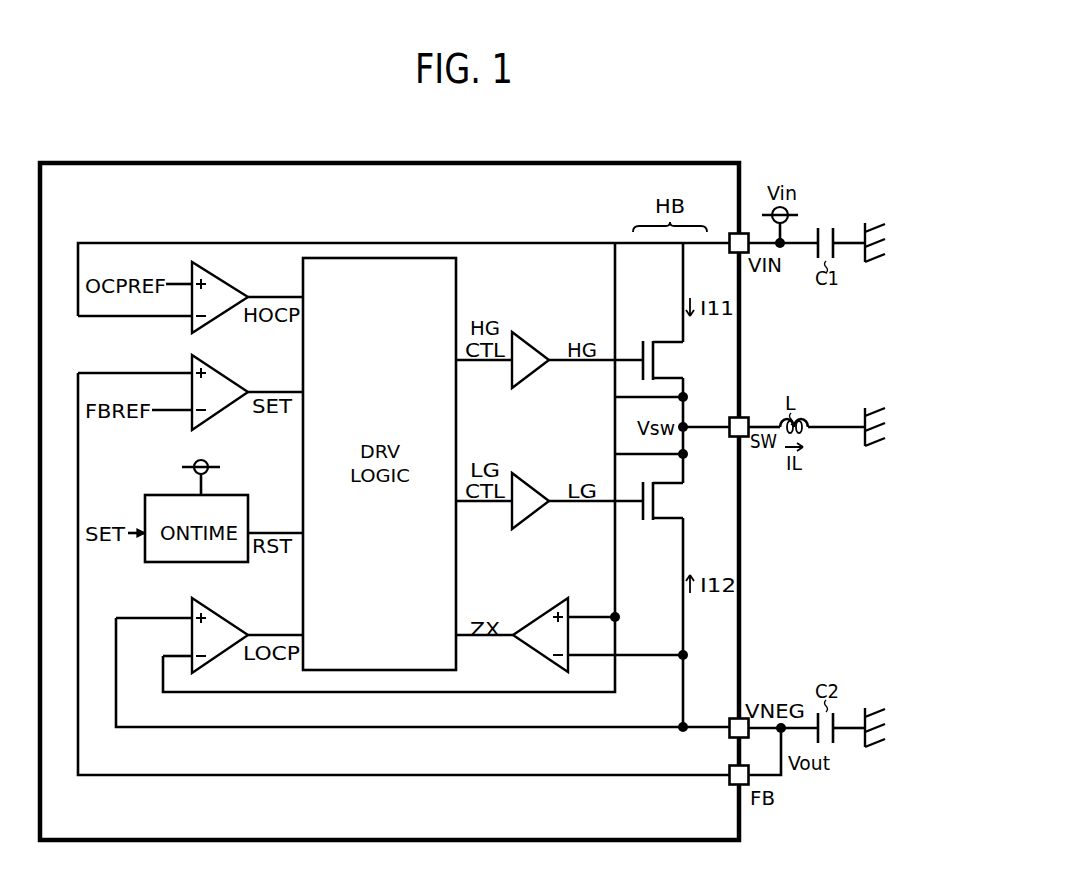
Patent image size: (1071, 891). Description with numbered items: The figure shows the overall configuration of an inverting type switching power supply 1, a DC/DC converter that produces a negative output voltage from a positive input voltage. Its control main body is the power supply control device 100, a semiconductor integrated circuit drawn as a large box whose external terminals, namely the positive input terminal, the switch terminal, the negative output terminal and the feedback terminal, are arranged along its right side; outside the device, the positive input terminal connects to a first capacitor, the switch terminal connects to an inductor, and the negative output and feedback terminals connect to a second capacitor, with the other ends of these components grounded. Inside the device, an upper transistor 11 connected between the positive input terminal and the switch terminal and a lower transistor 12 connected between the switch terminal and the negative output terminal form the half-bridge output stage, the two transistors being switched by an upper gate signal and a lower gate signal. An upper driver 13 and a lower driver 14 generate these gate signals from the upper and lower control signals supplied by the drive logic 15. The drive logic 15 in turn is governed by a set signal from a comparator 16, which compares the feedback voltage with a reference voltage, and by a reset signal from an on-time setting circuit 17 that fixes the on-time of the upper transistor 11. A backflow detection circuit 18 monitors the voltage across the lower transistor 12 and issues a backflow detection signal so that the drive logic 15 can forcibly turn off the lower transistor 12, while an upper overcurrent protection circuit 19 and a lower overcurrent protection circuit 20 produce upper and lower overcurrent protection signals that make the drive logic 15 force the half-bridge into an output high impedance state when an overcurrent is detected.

The inverting type switching power supply 1 is at (838, 148).
The power supply control device 100 is at (390, 163).
The upper transistor 11 is at (687, 360).
The lower transistor 12 is at (687, 501).
The upper driver 13 is at (530, 350).
The lower driver 14 is at (530, 491).
The drive logic 15 is at (381, 258).
The comparator 16 is at (218, 375).
The on-time setting circuit 17 is at (160, 495).
The backflow detection circuit 18 is at (540, 621).
The upper overcurrent protection circuit 19 is at (218, 282).
The lower overcurrent protection circuit 20 is at (218, 621).